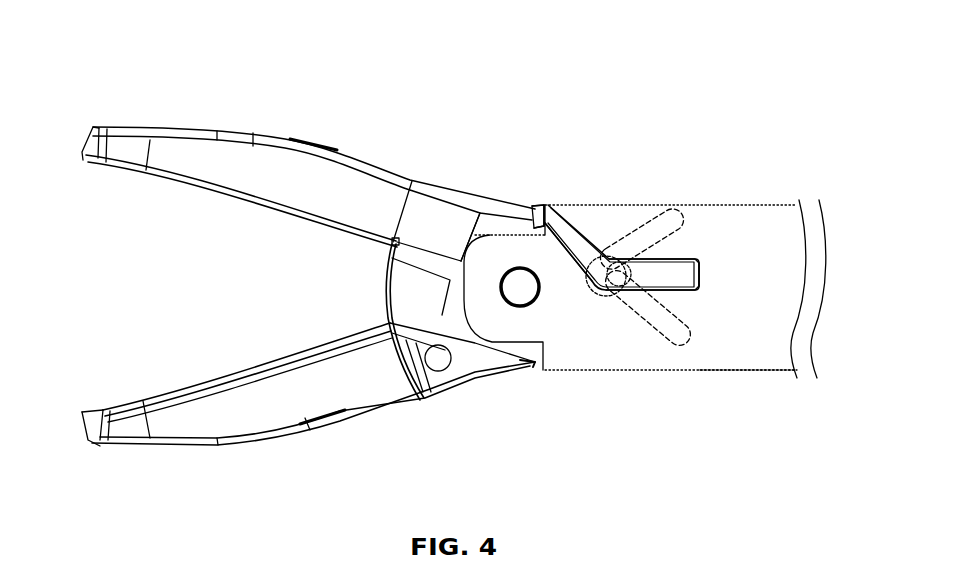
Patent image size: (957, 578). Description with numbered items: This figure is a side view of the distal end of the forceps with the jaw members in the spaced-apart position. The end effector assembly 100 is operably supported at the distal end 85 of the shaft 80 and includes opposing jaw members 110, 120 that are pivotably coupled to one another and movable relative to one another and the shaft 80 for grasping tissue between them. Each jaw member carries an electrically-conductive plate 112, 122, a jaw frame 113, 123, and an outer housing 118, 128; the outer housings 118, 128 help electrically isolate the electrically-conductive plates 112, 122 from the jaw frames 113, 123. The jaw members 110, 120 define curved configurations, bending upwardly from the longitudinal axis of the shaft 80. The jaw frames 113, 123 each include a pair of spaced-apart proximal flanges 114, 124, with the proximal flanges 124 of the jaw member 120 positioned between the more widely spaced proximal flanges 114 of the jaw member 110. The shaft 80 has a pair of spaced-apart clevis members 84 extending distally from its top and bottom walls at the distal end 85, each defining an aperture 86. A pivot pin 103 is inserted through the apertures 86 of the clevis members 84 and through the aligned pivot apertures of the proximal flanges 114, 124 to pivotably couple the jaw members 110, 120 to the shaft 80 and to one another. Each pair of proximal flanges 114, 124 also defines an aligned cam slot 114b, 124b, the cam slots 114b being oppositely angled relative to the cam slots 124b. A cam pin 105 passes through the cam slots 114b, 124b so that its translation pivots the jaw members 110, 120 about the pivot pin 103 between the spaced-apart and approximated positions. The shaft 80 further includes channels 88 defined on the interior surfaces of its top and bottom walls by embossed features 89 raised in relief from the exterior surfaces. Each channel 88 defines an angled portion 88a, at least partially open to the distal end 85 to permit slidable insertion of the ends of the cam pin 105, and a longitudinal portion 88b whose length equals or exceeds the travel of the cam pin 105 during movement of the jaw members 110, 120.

The end effector assembly 100 is at (540, 63).
The jaw member 110 is at (118, 103).
The electrically-conductive plate 112 is at (190, 196).
The outer housing 118 is at (250, 152).
The jaw member 120 is at (118, 484).
The electrically-conductive plate 122 is at (186, 383).
The outer housing 128 is at (273, 423).
The jaw frame 123 is at (471, 372).
The proximal flanges 124 is at (533, 368).
The cam slot 124b is at (658, 226).
The pivot pin 103 is at (518, 268).
The clevis members 84 is at (487, 250).
The aperture 86 is at (541, 296).
The jaw frame 113 is at (537, 204).
The proximal flanges 114 is at (547, 205).
The cam slot 114b is at (650, 310).
The cam pin 105 is at (621, 288).
The shaft 80 is at (768, 212).
The distal end 85 is at (769, 362).
The channels 88 is at (600, 238).
The angled portion 88a is at (576, 236).
The longitudinal portion 88b is at (688, 270).
The embossed features 89 is at (698, 278).